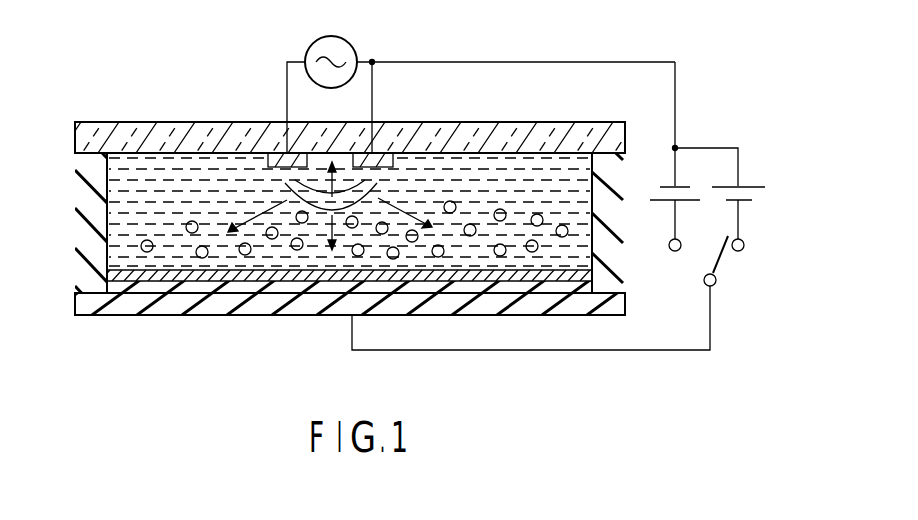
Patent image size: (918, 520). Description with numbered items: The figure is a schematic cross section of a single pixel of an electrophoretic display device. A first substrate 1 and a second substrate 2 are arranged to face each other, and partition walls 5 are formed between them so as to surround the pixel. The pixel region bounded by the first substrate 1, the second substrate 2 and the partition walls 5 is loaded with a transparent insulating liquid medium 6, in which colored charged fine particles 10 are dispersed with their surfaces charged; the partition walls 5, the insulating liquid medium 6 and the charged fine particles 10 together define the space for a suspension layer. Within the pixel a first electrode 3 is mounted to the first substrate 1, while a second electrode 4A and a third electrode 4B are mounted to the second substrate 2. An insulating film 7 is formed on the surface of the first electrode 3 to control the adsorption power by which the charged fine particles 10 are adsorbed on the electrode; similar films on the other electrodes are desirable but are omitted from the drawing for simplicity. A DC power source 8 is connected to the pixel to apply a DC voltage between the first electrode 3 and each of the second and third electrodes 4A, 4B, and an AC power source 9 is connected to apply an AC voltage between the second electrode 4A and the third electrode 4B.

The first substrate 1 is at (122, 308).
The second substrate 2 is at (80, 133).
The first electrode 3 is at (307, 291).
The second electrode 4A is at (277, 153).
The third electrode 4B is at (380, 158).
The partition walls 5 is at (82, 246).
The insulating liquid medium 6 is at (490, 167).
The insulating film 7 is at (258, 281).
The DC power source 8 is at (705, 182).
The AC power source 9 is at (348, 50).
The charged fine particles 10 is at (201, 259).